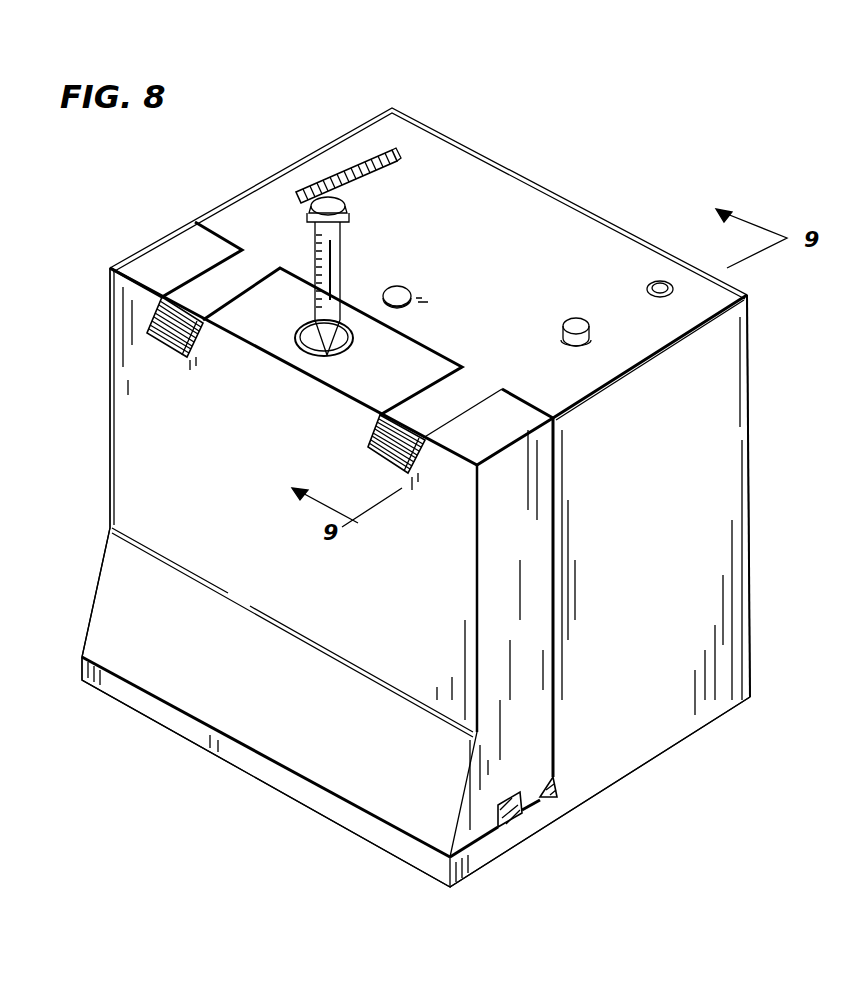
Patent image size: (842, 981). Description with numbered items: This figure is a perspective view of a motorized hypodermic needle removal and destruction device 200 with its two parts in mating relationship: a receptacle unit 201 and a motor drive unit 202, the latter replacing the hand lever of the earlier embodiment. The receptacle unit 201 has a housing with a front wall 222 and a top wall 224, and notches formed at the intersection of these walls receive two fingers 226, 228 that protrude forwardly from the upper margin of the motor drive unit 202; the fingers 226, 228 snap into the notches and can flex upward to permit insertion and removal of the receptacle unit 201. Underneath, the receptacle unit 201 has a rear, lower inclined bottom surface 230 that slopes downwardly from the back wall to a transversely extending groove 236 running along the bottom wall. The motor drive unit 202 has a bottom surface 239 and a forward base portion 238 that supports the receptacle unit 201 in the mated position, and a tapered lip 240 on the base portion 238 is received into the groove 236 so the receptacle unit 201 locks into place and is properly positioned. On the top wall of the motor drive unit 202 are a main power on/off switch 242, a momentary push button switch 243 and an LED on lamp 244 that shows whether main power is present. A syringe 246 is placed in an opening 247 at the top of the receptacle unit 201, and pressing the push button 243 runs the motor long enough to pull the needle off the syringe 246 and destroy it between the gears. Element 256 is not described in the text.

The hypodermic needle removal and destruction device 200 is at (262, 141).
The receptacle unit 201 is at (216, 682).
The motor drive unit 202 is at (649, 532).
The front wall 222 is at (140, 407).
The top wall 224 is at (160, 262).
The finger 226 is at (428, 343).
The finger 228 is at (213, 287).
The rear lower inclined bottom surface 230 is at (547, 797).
The groove 236 is at (508, 812).
The forward base portion 238 is at (273, 777).
The bottom surface 239 is at (687, 740).
The tapered lip 240 is at (512, 798).
The main power on/off switch 242 is at (360, 152).
The momentary push button switch 243 is at (578, 320).
The LED on lamp 244 is at (406, 286).
The syringe 246 is at (338, 263).
The opening 247 is at (293, 337).
The vent port 256 is at (660, 282).